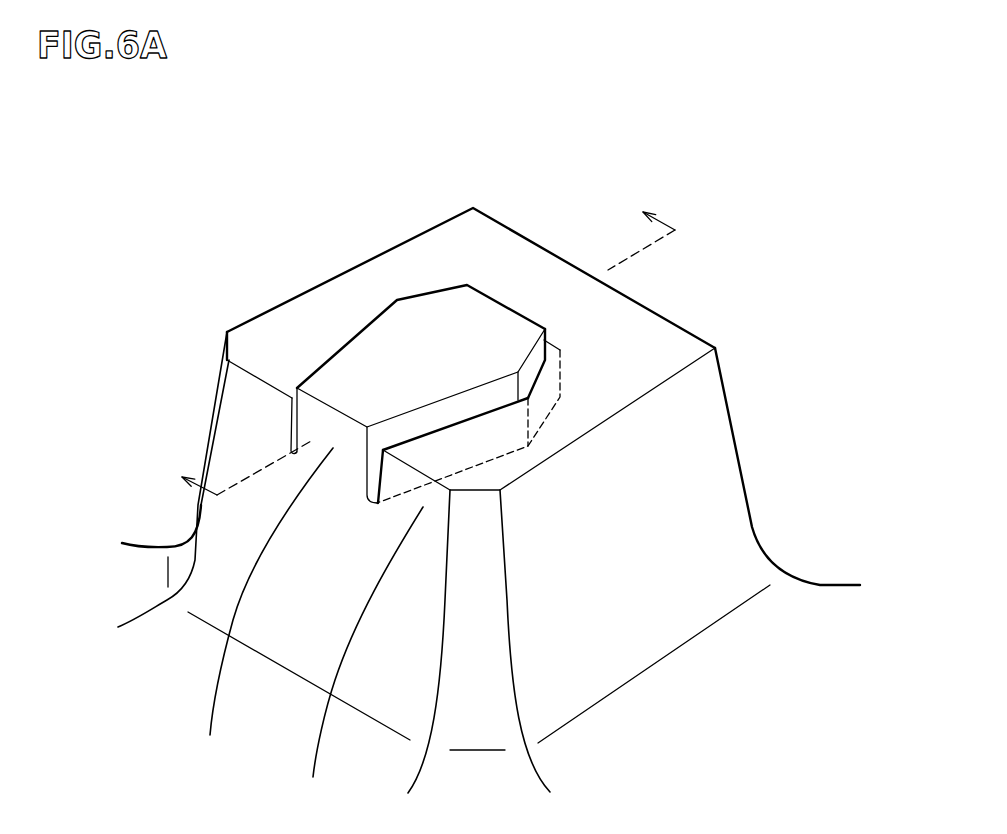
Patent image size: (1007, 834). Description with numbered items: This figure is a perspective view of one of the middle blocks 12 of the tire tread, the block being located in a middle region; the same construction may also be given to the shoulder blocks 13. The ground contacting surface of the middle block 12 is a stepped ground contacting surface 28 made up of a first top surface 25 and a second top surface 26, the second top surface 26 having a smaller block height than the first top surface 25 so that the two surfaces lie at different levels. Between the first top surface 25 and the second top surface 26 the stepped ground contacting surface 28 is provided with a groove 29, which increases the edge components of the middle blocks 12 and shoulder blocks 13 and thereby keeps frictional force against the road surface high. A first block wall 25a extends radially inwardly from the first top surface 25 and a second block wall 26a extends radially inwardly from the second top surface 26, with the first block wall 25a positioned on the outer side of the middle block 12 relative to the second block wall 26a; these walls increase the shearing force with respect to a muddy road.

The middle block 12 is at (489, 491).
The shoulder block 13 is at (327, 317).
The first top surface 25 is at (437, 352).
The second top surface 26 is at (583, 330).
The stepped ground contacting surface 28 is at (543, 305).
The groove 29 is at (533, 378).
The first block wall 25a is at (257, 608).
The second block wall 26a is at (355, 660).